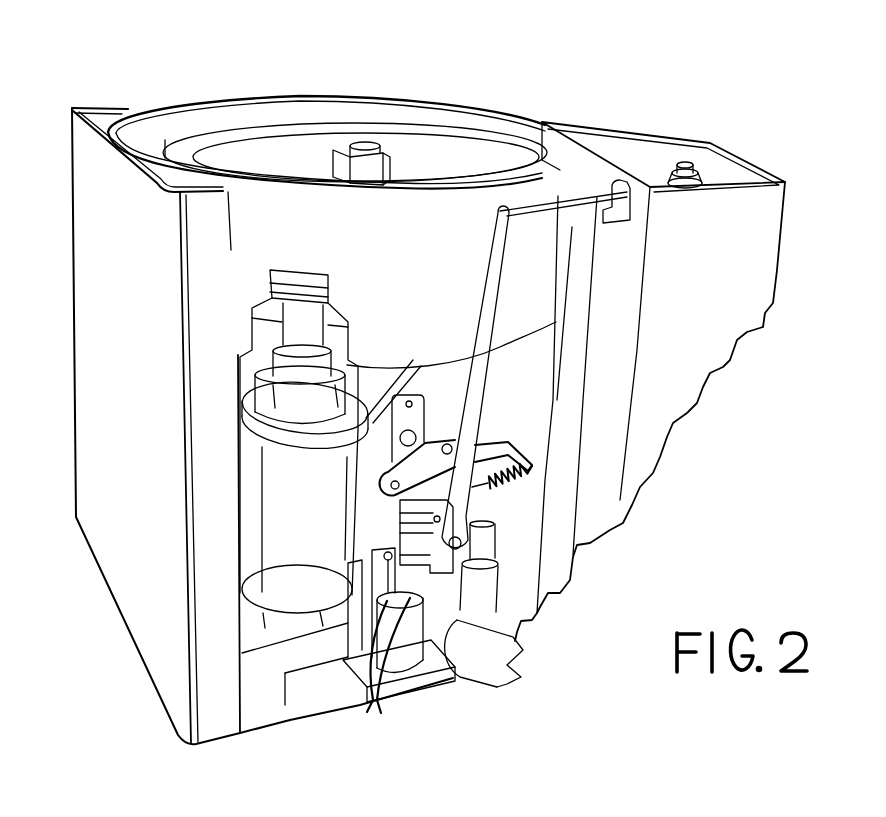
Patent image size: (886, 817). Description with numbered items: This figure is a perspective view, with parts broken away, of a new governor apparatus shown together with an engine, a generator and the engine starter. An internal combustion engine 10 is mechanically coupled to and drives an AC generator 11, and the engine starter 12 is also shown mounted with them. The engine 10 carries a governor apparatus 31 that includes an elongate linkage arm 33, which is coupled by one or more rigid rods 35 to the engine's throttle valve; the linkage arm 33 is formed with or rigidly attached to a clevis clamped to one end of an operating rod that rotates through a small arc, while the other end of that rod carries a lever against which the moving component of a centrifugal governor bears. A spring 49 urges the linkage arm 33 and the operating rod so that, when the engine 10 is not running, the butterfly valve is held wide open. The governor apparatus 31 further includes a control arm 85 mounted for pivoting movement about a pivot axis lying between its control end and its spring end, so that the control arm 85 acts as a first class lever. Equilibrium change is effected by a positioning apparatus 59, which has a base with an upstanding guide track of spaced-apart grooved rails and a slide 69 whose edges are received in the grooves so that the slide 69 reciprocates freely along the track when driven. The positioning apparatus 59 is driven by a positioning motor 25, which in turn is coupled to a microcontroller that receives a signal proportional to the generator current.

The internal combustion engine 10 is at (377, 370).
The AC generator 11 is at (410, 165).
The engine starter 12 is at (262, 571).
The positioning motor 25 is at (410, 645).
The governor apparatus 31 is at (600, 462).
The linkage arm 33 is at (490, 253).
The rigid rod 35 is at (572, 227).
The spring 49 is at (508, 488).
The positioning apparatus 59 is at (468, 700).
The slide 69 is at (380, 551).
The control arm 85 is at (420, 467).